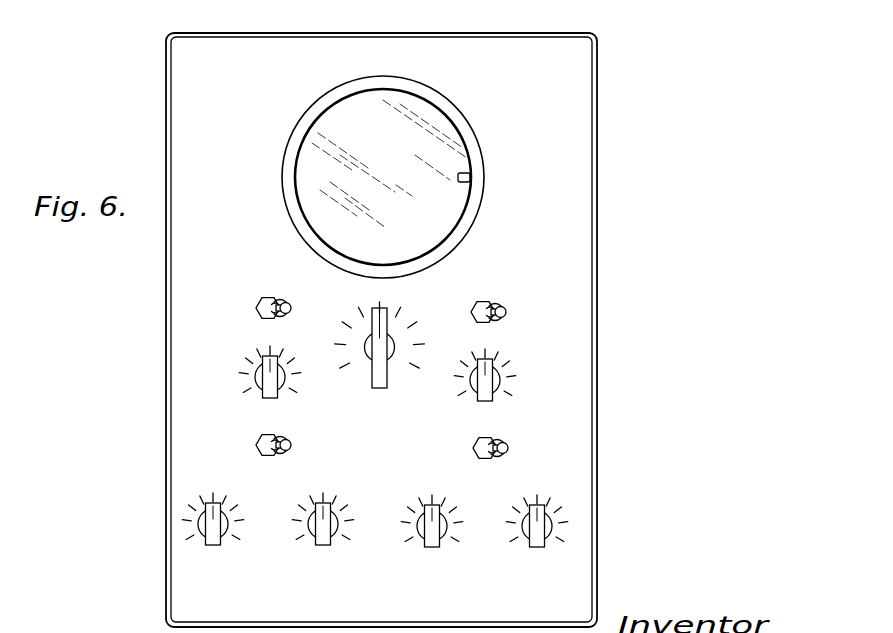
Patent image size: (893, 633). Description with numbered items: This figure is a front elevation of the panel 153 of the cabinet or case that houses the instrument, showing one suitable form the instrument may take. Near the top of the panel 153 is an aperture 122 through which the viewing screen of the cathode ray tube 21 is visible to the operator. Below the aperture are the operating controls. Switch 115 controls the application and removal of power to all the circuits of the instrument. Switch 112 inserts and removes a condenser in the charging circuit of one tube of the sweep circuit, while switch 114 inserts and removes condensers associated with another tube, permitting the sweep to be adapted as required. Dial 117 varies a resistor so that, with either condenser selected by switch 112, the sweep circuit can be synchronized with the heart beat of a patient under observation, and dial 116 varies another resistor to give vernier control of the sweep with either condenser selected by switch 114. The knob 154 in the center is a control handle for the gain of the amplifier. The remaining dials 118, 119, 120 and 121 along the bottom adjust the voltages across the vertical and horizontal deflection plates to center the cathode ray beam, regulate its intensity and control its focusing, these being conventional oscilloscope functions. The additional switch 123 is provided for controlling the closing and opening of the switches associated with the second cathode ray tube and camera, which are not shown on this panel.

The panel 153 is at (594, 77).
The cathode ray tube 21 is at (290, 148).
The aperture 122 is at (478, 171).
The switch 112 is at (280, 300).
The switch 114 is at (497, 304).
The switch 115 is at (256, 445).
The additional switch 123 is at (473, 450).
The knob 154 is at (388, 320).
The dial 117 is at (256, 379).
The dial 116 is at (501, 379).
The dial 118 is at (215, 545).
The dial 119 is at (325, 545).
The dial 120 is at (434, 547).
The dial 121 is at (539, 547).